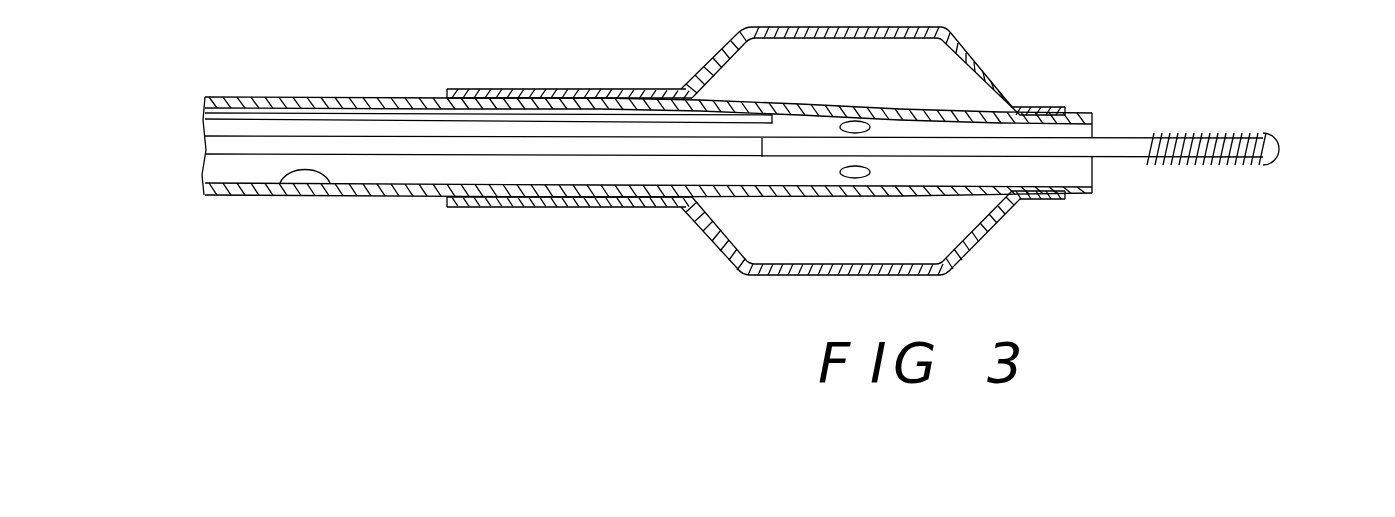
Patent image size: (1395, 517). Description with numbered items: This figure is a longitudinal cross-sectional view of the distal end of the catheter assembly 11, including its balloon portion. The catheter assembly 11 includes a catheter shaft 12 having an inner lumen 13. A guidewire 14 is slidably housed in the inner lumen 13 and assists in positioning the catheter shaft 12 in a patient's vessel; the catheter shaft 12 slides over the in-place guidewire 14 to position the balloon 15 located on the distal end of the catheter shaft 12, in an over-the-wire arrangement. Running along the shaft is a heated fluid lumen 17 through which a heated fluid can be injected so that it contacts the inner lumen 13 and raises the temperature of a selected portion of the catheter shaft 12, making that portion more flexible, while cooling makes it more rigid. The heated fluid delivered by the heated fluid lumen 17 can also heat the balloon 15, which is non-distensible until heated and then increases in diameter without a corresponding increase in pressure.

The catheter assembly 11 is at (740, 174).
The catheter shaft 12 is at (410, 197).
The inner lumen 13 is at (285, 183).
The guidewire 14 is at (362, 137).
The balloon 15 is at (915, 26).
The heated fluid lumen 17 is at (462, 117).